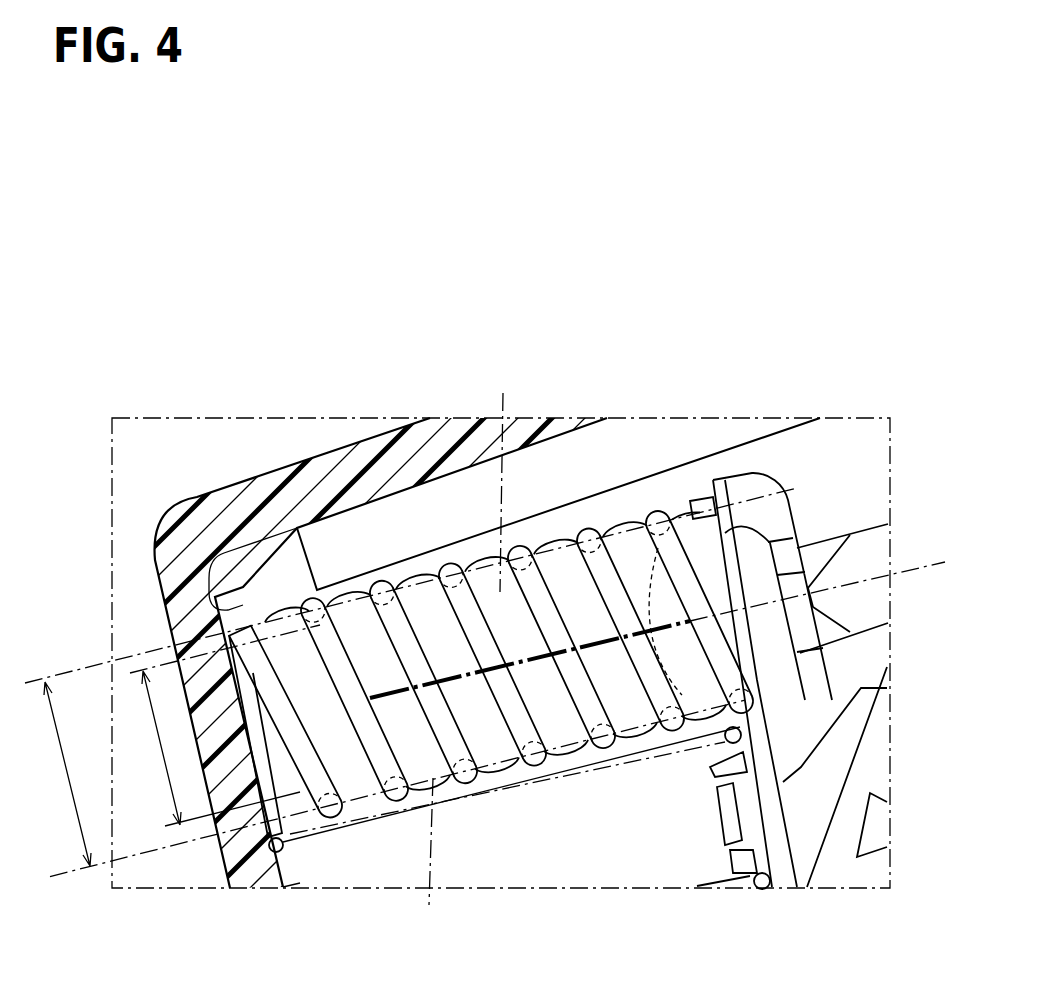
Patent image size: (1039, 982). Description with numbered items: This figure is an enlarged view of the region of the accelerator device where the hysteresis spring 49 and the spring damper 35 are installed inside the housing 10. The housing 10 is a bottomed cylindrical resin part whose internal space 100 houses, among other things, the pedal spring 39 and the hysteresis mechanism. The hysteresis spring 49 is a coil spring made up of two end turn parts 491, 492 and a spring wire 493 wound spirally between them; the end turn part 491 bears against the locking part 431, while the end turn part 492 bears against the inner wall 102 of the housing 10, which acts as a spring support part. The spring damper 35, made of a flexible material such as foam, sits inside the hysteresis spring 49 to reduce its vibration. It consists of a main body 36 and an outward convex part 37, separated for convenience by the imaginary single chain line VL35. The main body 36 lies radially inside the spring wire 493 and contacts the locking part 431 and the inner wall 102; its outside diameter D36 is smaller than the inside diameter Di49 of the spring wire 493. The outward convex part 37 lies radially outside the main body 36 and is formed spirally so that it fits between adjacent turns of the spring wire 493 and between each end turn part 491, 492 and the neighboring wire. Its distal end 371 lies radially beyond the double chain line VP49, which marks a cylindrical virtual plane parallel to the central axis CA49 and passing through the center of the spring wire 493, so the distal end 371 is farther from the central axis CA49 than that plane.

The housing 10 is at (312, 490).
The inner wall 102 is at (233, 590).
The internal space 100 is at (817, 483).
The main body 36 is at (567, 590).
The hysteresis spring 49 is at (411, 628).
The end turn part 492 is at (200, 637).
The spring wire 493 is at (380, 588).
The end turn part 491 is at (711, 503).
The distal end 371 is at (620, 524).
The outward convex part 37 is at (632, 533).
The locking part 431 is at (748, 553).
The central axis CA49 is at (917, 562).
The single chain line VL35 is at (503, 479).
The double chain line VP49 is at (433, 856).
The spring damper 35 is at (639, 761).
The pedal spring 39 is at (307, 850).
The outside diameter D36 is at (146, 705).
The inside diameter Di49 is at (86, 864).